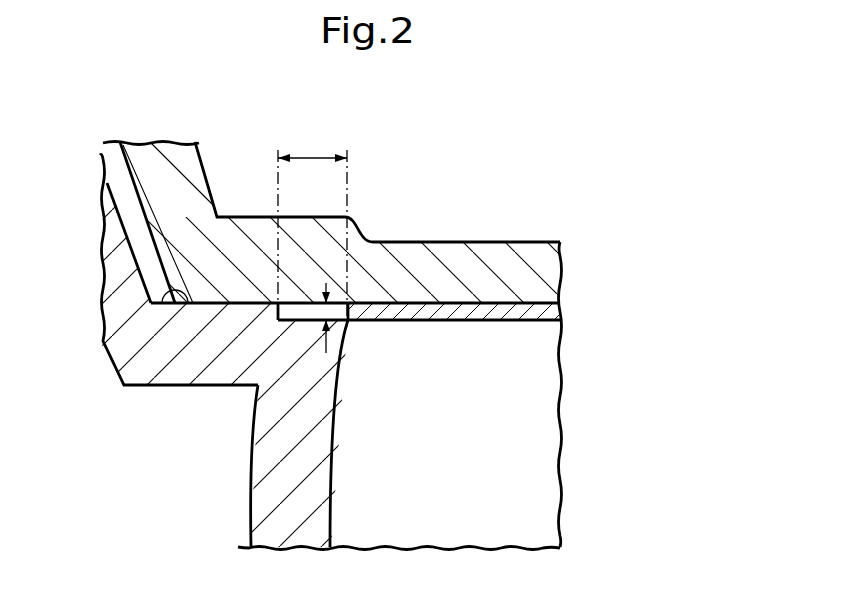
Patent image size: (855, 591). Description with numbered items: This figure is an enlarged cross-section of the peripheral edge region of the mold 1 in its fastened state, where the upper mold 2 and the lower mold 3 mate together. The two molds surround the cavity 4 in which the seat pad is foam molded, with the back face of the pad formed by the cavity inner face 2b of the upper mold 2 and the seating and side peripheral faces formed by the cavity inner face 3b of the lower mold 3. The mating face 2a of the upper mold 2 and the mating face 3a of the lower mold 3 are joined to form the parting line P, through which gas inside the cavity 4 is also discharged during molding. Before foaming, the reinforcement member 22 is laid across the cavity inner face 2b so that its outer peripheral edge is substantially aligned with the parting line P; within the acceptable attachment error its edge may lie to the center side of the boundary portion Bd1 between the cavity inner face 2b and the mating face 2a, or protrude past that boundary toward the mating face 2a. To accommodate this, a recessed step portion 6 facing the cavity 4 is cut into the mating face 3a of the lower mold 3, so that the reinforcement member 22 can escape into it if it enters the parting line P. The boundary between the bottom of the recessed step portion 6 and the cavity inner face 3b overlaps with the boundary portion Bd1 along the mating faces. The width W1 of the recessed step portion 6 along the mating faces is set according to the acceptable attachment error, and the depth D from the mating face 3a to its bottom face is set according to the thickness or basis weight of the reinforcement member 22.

The mold 1 is at (601, 218).
The upper mold 2 is at (483, 242).
The mating face 2a is at (216, 308).
The cavity inner face 2b is at (547, 300).
The reinforcement member 22 is at (452, 322).
The lower mold 3 is at (252, 467).
The mating face 3a is at (168, 293).
The cavity inner face 3b is at (334, 463).
The cavity 4 is at (508, 459).
The recessed step portion 6 is at (311, 320).
The parting line P is at (236, 308).
The width W1 is at (311, 156).
The boundary portion Bd1 is at (347, 168).
The depth D is at (330, 342).